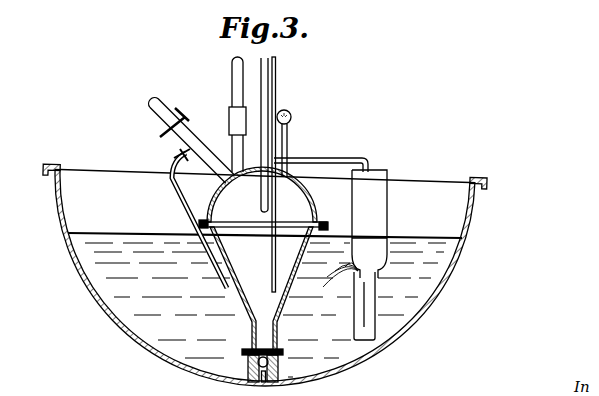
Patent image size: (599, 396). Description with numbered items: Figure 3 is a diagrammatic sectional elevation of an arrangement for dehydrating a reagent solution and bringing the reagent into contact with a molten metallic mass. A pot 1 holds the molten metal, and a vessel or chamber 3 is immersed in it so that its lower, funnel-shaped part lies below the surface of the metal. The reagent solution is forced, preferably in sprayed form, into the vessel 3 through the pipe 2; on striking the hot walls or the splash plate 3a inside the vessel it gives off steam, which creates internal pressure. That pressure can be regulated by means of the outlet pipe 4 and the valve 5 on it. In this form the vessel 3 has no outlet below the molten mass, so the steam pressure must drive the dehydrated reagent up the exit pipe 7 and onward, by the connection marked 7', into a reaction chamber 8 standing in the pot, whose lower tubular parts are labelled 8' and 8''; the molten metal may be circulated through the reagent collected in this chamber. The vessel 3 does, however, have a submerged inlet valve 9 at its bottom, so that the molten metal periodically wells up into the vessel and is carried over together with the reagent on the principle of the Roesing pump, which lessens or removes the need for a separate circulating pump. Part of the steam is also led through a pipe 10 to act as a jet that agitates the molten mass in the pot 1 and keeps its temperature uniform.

The pot 1 is at (391, 339).
The pipe 2 is at (269, 86).
The vessel or chamber 3 is at (226, 262).
The splash plate 3a is at (229, 221).
The outlet pipe 4 is at (162, 114).
The valve 5 is at (232, 126).
The exit pipe 7 is at (283, 174).
The connecting pipe with gauge 7' is at (326, 143).
The reaction chamber 8 is at (369, 224).
The tube 8' is at (382, 306).
The nozzle opening 8'' is at (343, 295).
The inlet valve 9 is at (276, 348).
The pipe 10 is at (170, 191).